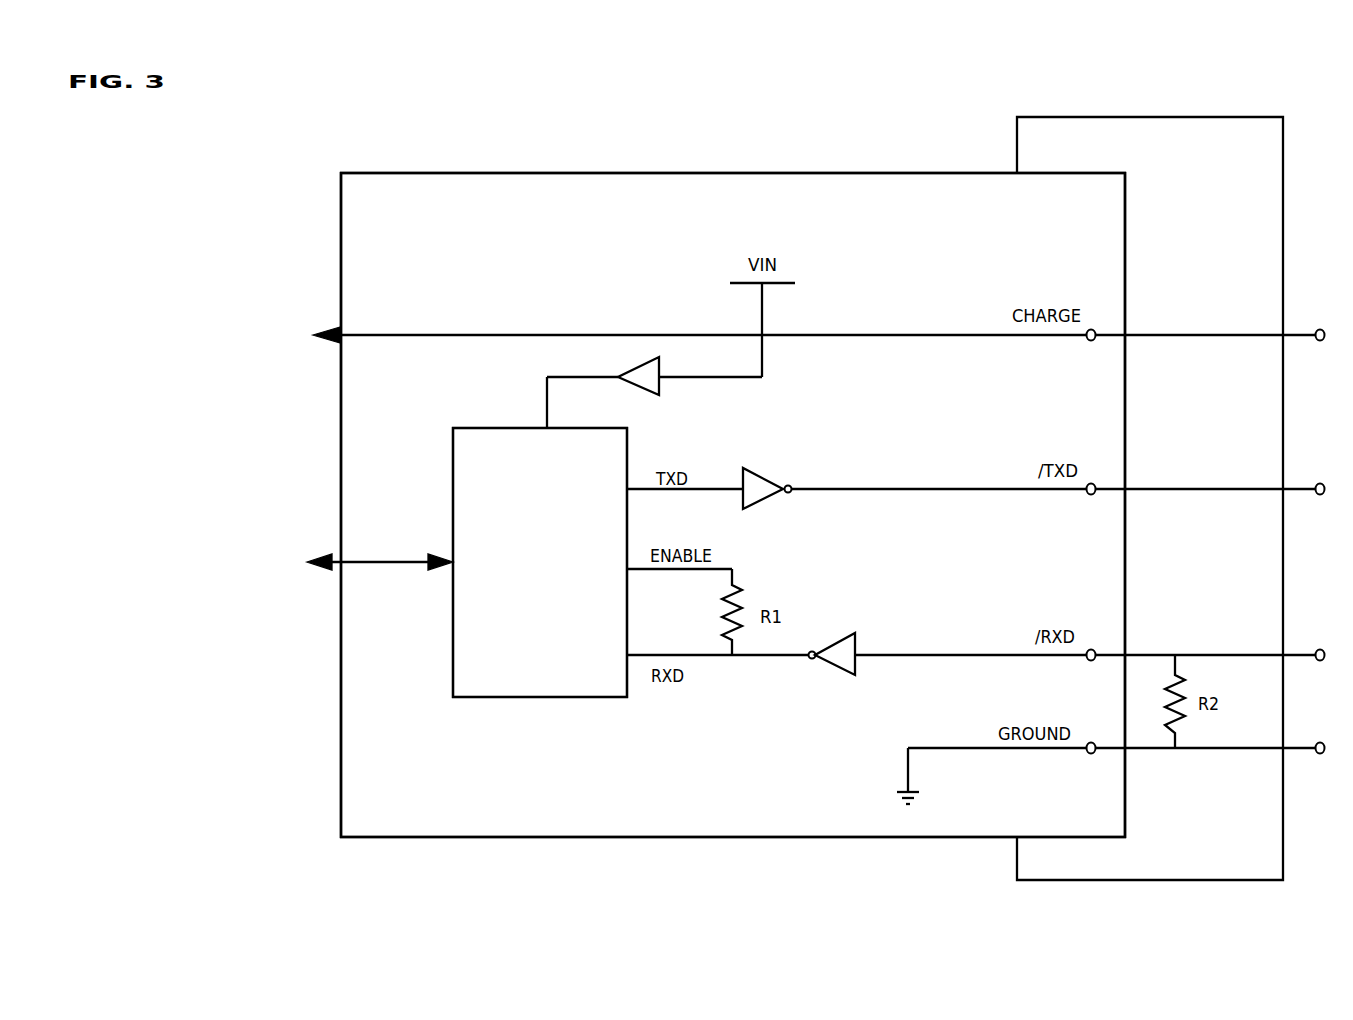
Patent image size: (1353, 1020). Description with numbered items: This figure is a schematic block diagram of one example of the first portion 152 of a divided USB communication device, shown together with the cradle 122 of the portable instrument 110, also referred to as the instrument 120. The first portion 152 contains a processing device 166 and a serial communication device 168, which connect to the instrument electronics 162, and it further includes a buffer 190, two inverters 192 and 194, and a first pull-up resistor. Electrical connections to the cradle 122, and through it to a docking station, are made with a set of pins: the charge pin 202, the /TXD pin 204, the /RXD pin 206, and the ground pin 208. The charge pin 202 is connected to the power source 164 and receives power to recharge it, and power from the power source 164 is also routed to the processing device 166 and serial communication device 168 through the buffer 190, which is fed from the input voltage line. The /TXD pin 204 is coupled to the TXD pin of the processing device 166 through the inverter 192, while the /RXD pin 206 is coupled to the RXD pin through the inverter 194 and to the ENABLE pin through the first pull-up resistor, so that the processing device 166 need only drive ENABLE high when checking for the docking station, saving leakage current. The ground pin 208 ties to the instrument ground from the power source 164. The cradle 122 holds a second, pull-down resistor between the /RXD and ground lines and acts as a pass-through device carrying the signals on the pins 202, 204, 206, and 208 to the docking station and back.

The portable instrument 110 is at (288, 184).
The instrument 120 is at (279, 235).
The cradle 122 is at (1275, 146).
The first portion 152 is at (1118, 201).
The instrument electronics 162 is at (298, 578).
The power source 164 is at (297, 355).
The processing device 166 is at (586, 548).
The serial communication device 168 is at (586, 620).
The buffer 190 is at (658, 385).
The inverter 192 is at (761, 478).
The inverter 194 is at (853, 660).
The charge pin 202 is at (1087, 340).
The /TXD pin 204 is at (1087, 496).
The /RXD pin 206 is at (1087, 661).
The ground pin 208 is at (1087, 755).